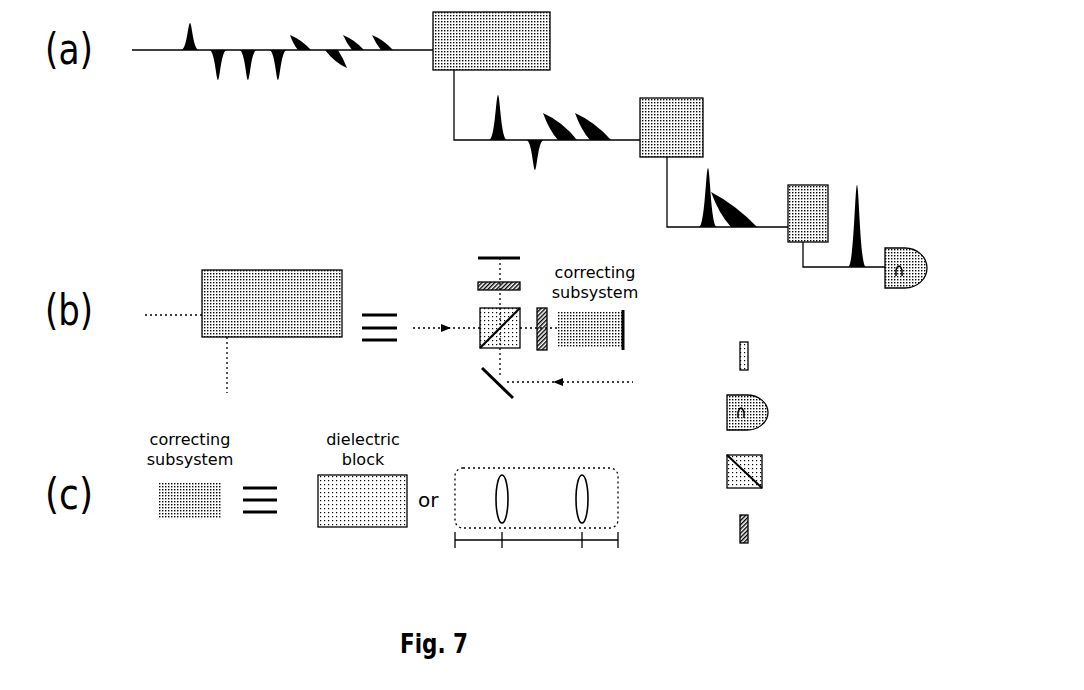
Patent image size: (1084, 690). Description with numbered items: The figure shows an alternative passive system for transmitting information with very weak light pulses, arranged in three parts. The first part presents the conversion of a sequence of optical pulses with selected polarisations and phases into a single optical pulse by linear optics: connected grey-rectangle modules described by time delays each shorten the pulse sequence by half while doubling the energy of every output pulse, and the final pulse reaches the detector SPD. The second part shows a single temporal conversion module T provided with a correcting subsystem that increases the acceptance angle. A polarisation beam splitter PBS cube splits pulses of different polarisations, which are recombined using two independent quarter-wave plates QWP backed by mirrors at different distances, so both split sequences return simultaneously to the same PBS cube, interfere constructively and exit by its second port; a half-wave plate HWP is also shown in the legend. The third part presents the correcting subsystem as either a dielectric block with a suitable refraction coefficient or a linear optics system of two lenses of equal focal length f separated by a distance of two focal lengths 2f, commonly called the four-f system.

The half-wave plate HWP is at (802, 355).
The detector SPD is at (795, 411).
The polarisation beam splitter cube PBS is at (795, 471).
The quarter-wave plate QWP is at (802, 530).
The single module for the temporal conversion of pulses T is at (272, 303).
The focal length f is at (535, 572).
The distance of two focal lengths 2f is at (538, 572).